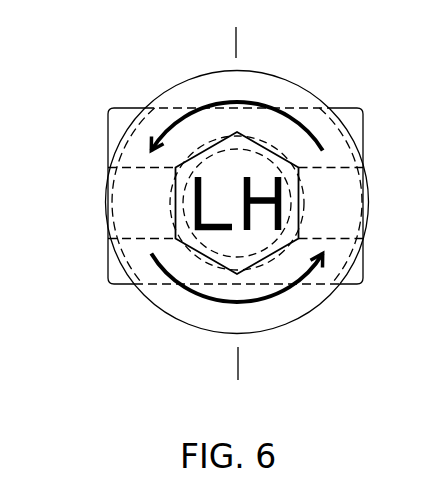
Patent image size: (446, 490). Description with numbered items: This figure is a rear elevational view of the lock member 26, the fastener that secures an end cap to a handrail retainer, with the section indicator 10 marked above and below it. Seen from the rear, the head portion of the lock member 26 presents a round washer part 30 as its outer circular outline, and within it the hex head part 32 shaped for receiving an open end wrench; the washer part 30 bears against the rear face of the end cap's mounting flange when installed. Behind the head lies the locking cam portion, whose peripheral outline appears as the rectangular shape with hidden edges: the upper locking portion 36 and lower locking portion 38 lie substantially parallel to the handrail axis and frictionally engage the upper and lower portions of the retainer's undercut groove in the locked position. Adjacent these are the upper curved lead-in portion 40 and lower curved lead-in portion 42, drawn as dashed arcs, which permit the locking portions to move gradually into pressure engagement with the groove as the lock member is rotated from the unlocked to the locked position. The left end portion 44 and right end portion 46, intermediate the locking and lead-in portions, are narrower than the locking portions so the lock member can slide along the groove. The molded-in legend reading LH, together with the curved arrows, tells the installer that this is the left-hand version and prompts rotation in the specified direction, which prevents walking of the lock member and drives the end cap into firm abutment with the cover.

The fastener assembly 10 is at (236, 27).
The lock member 26 is at (312, 79).
The washer part 30 is at (180, 308).
The hex head part 32 is at (305, 192).
The upper locking portion 36 is at (108, 128).
The lower locking portion 38 is at (364, 258).
The upper curved lead-in portion 40 is at (121, 265).
The lower curved lead-in portion 42 is at (332, 110).
The left end portion 44 is at (180, 82).
The right end portion 46 is at (317, 285).